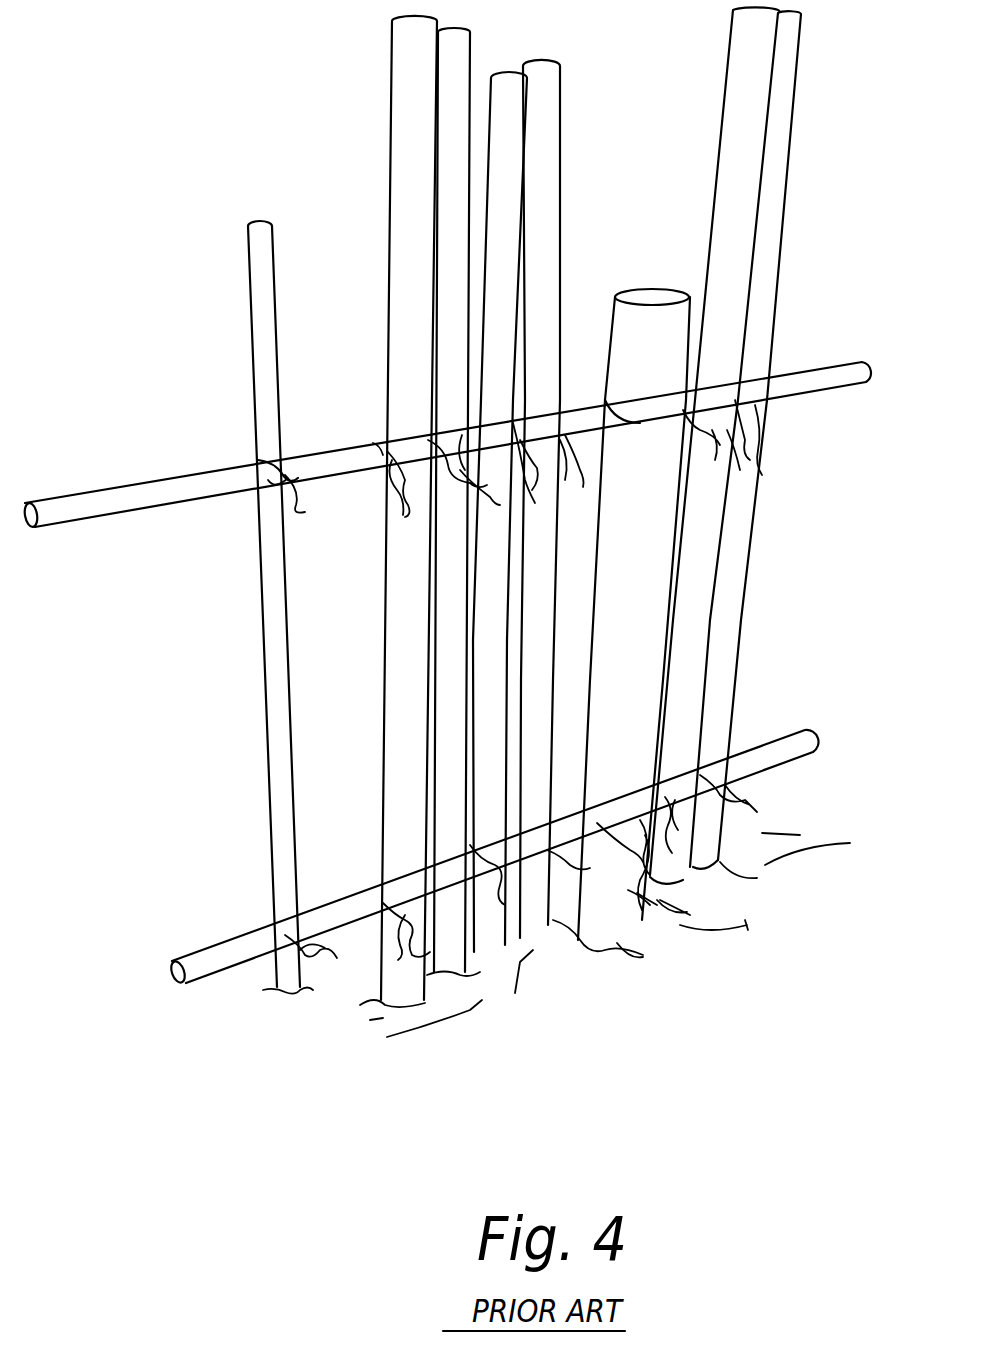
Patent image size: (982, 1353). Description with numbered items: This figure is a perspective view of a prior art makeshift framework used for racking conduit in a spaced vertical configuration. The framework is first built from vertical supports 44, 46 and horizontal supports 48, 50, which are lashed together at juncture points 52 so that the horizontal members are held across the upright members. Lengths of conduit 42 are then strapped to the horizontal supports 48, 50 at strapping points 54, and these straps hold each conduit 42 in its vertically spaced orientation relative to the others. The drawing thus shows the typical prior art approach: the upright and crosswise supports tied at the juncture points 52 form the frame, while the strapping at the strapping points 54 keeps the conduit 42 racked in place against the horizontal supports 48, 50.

The conduit 42 is at (520, 962).
The vertical support 44 is at (240, 433).
The vertical support 46 is at (808, 342).
The horizontal support 48 is at (354, 940).
The horizontal support 50 is at (318, 425).
The juncture point 52 is at (254, 493).
The strapping point 54 is at (540, 415).